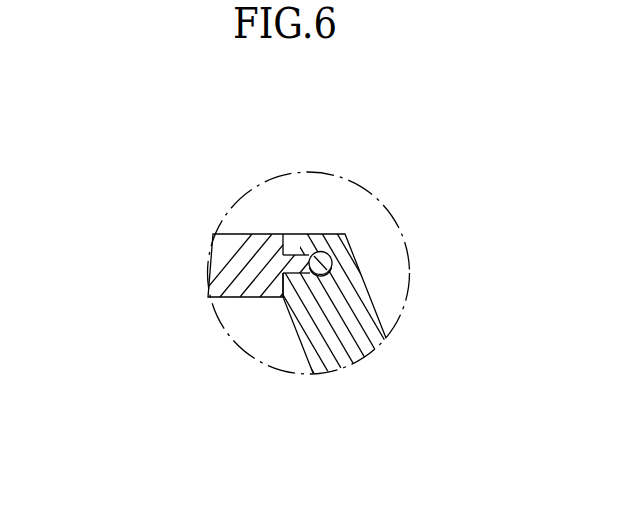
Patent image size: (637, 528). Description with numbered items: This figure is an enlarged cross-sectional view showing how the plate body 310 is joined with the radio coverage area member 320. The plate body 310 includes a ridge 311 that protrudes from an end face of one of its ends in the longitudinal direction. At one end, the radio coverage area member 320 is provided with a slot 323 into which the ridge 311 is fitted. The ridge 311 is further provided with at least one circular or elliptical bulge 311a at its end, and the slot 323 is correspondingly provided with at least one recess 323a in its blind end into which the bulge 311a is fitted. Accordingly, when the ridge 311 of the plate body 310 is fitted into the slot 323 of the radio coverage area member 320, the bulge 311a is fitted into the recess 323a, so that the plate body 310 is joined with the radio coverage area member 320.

The plate body 310 is at (217, 265).
The ridge 311 is at (295, 264).
The bulge 311a is at (322, 277).
The radio coverage area member 320 is at (360, 308).
The slot 323 is at (297, 250).
The recess 323a is at (333, 260).